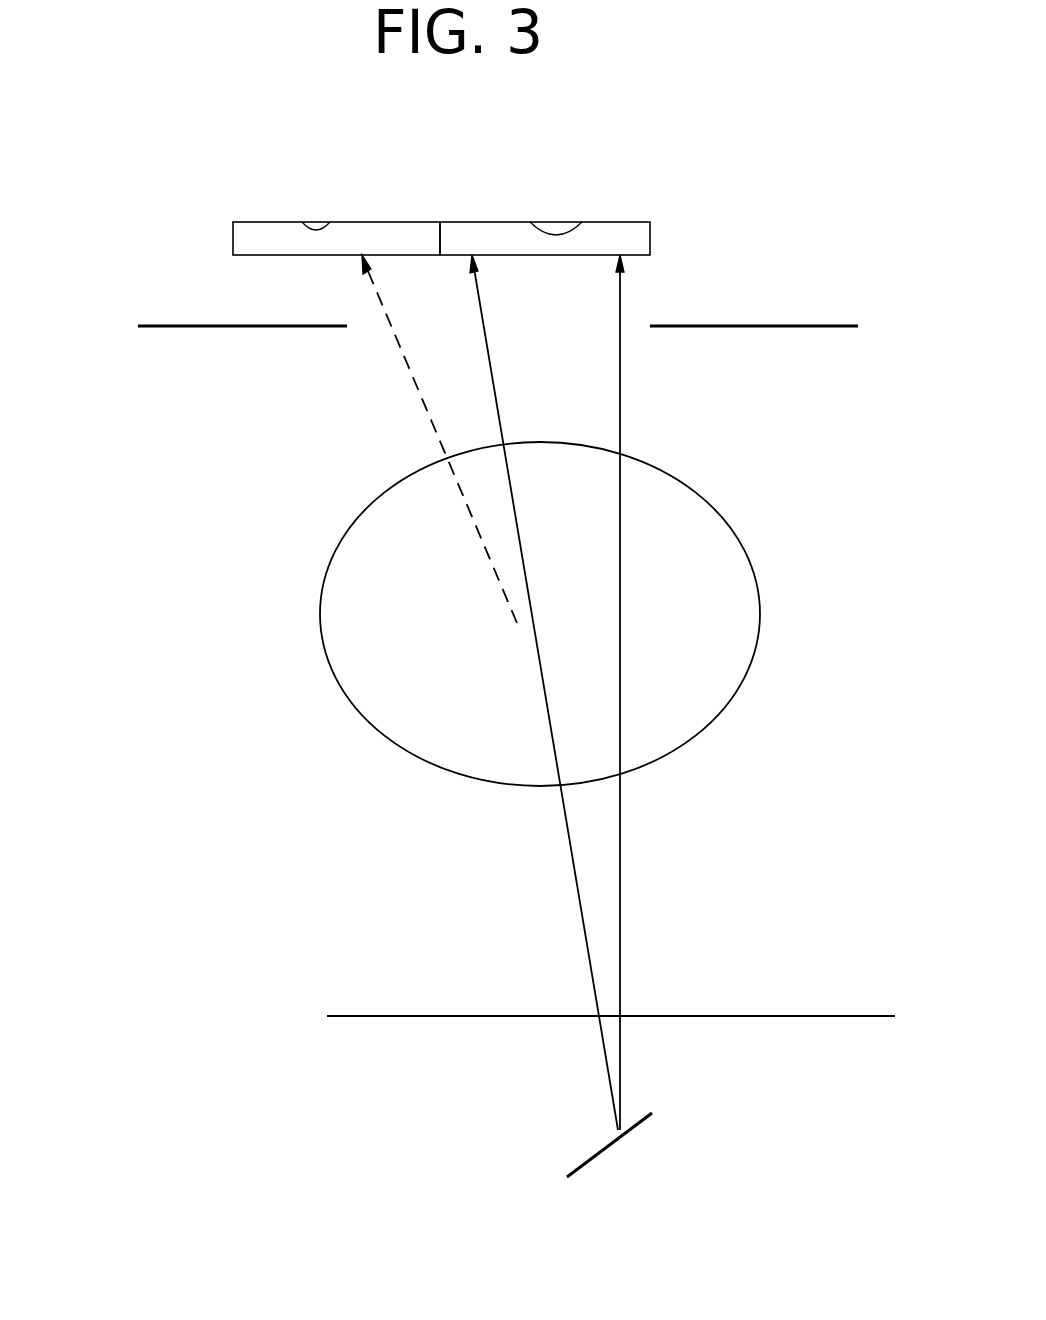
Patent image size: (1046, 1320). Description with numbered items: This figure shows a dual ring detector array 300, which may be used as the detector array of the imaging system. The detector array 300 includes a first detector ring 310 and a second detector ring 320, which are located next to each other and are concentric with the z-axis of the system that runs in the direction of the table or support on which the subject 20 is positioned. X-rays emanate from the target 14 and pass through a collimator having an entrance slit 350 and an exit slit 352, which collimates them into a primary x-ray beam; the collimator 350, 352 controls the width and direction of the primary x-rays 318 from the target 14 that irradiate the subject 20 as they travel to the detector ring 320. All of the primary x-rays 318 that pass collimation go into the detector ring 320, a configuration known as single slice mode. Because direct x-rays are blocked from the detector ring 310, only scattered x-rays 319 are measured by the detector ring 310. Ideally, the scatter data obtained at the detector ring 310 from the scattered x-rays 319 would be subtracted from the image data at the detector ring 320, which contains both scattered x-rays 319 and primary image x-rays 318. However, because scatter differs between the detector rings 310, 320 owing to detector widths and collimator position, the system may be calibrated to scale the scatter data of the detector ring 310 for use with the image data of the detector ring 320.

The dual ring detector array 300 is at (120, 257).
The first detector ring 310 is at (308, 228).
The second detector ring 320 is at (574, 230).
The primary x-rays 318 is at (618, 396).
The scattered x-rays 319 is at (415, 398).
The exit slit 352 is at (772, 330).
The subject 20 is at (728, 562).
The entrance slit 350 is at (795, 1014).
The target 14 is at (632, 1127).